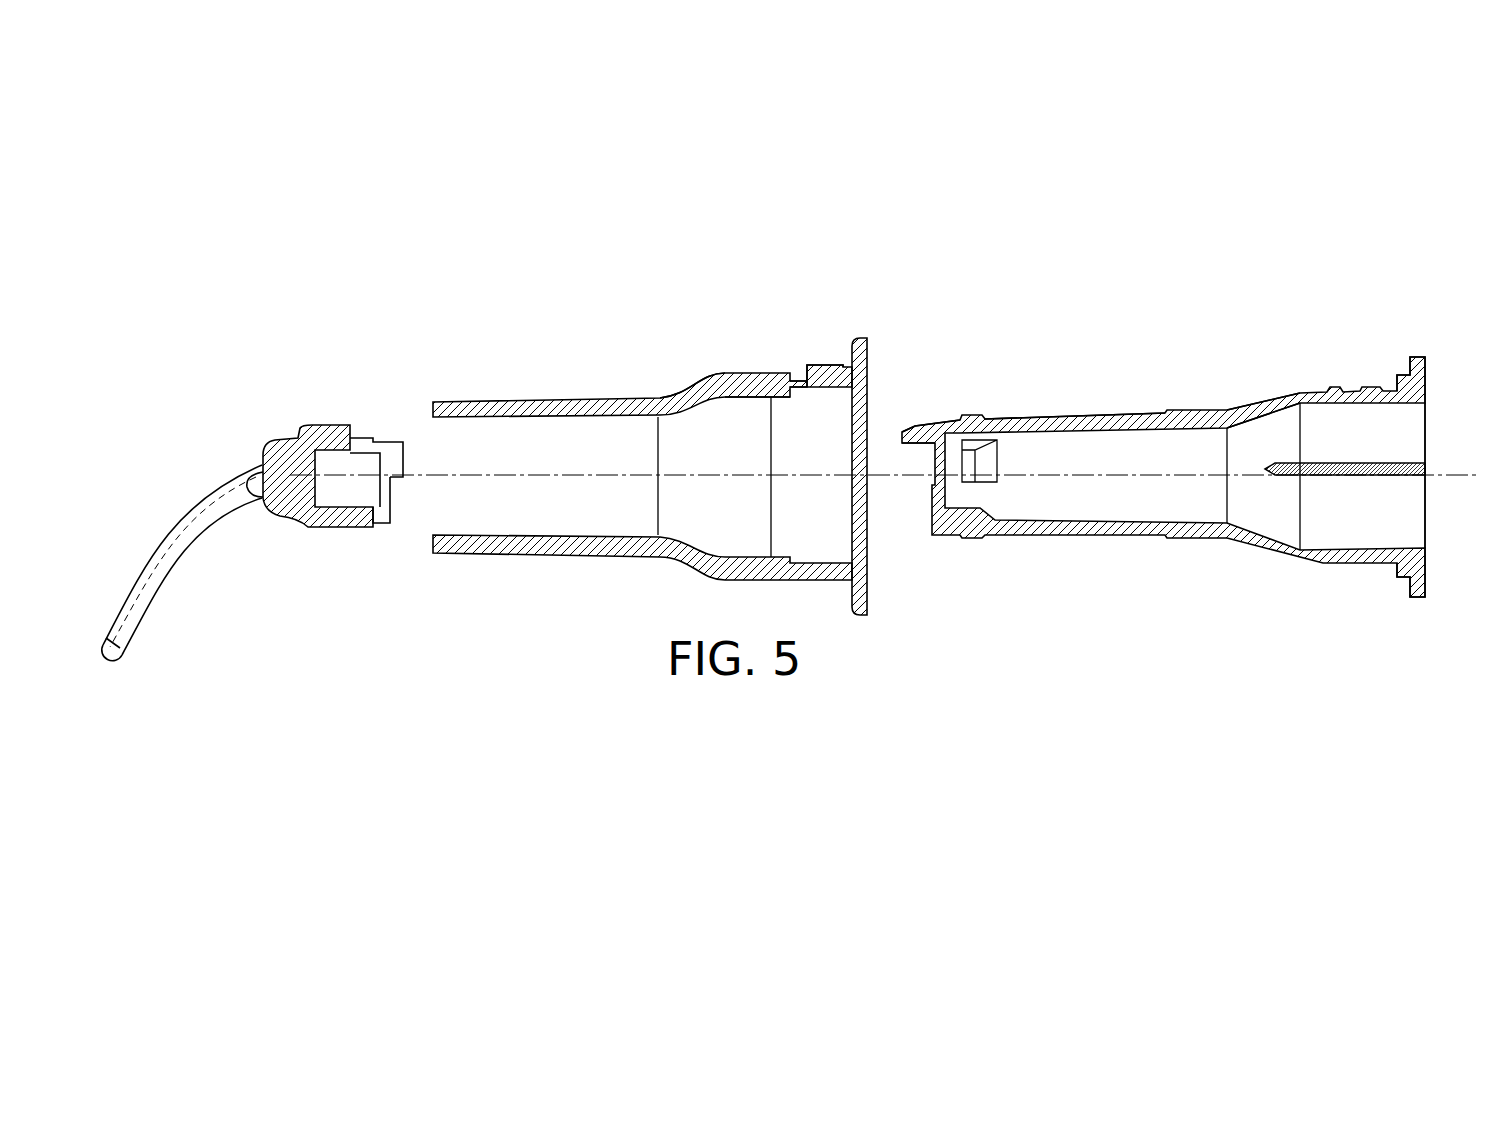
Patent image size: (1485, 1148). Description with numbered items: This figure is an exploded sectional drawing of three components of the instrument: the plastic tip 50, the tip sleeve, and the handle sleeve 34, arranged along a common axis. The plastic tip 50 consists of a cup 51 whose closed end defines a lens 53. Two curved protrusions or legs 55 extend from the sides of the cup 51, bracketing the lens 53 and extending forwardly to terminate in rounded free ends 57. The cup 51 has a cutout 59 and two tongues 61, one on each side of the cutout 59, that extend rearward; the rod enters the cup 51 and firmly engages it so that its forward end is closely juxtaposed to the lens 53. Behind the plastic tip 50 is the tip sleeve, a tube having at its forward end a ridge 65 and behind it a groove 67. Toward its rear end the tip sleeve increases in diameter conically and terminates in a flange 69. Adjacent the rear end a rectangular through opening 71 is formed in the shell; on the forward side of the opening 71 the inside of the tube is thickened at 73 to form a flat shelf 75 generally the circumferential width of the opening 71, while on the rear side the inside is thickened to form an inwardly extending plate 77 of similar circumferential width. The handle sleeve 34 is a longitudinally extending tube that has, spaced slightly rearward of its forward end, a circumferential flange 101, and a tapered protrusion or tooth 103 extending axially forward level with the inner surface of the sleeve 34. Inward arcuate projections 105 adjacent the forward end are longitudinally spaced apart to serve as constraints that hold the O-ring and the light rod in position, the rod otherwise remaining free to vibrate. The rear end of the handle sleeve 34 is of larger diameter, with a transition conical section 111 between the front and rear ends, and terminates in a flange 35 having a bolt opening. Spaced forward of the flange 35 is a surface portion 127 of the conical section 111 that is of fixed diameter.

The plastic tip 50 is at (300, 388).
The cup 51 is at (335, 527).
The lens 53 is at (265, 442).
The curved protrusions or legs 55 is at (167, 578).
The free ends 57 is at (110, 657).
The cutout 59 is at (358, 440).
The tongues 61 is at (410, 460).
The ridge 65 is at (443, 404).
The groove 67 is at (455, 400).
The flange 69 is at (868, 338).
The rectangular through opening 71 is at (803, 372).
The thickened portion 73 is at (712, 408).
The flat shelf 75 is at (750, 398).
The inwardly extending plate 77 is at (807, 390).
The handle sleeve 34 is at (1090, 418).
The flange 35 is at (1420, 357).
The circumferential flange 101 is at (970, 414).
The tapered protrusion or tooth 103 is at (920, 427).
The inward arcuate projections 105 is at (975, 462).
The transition conical section 111 is at (1247, 403).
The surface portion 127 is at (1308, 393).